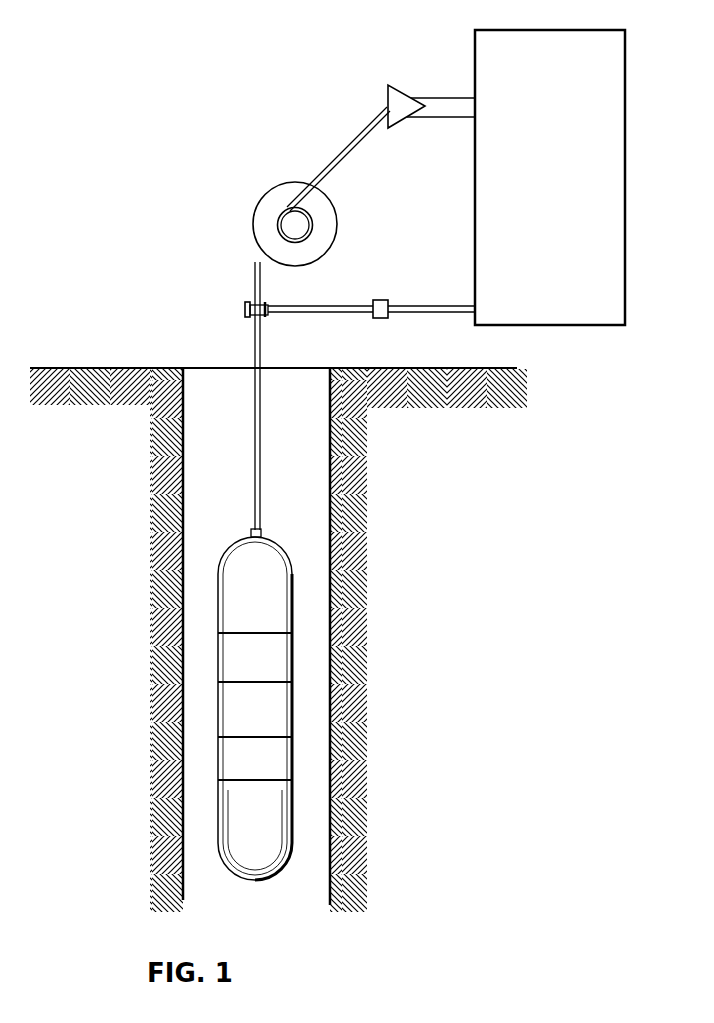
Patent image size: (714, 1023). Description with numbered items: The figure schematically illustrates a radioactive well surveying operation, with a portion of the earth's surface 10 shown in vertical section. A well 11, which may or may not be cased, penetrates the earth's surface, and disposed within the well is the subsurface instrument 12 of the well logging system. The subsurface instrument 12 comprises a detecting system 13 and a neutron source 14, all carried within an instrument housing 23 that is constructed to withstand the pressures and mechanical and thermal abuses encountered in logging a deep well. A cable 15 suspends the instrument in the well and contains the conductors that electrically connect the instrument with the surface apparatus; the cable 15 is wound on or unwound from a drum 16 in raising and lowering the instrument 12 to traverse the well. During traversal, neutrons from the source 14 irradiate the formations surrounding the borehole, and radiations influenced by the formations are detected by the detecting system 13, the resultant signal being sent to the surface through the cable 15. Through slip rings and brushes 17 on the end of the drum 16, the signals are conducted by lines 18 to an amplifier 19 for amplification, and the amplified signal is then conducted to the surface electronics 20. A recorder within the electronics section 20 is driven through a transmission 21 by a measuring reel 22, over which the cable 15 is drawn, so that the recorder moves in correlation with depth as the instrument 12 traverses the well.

The earth's surface 10 is at (92, 367).
The well 11 is at (293, 388).
The subsurface instrument 12 is at (293, 585).
The detecting system 13 is at (293, 662).
The neutron source 14 is at (293, 767).
The cable 15 is at (261, 437).
The drum 16 is at (335, 237).
The slip rings and brushes 17 is at (289, 208).
The lines 18 is at (360, 136).
The amplifier 19 is at (393, 84).
The surface electronics 20 is at (625, 78).
The transmission 21 is at (382, 300).
The measuring reel 22 is at (262, 302).
The instrument housing 23 is at (293, 815).